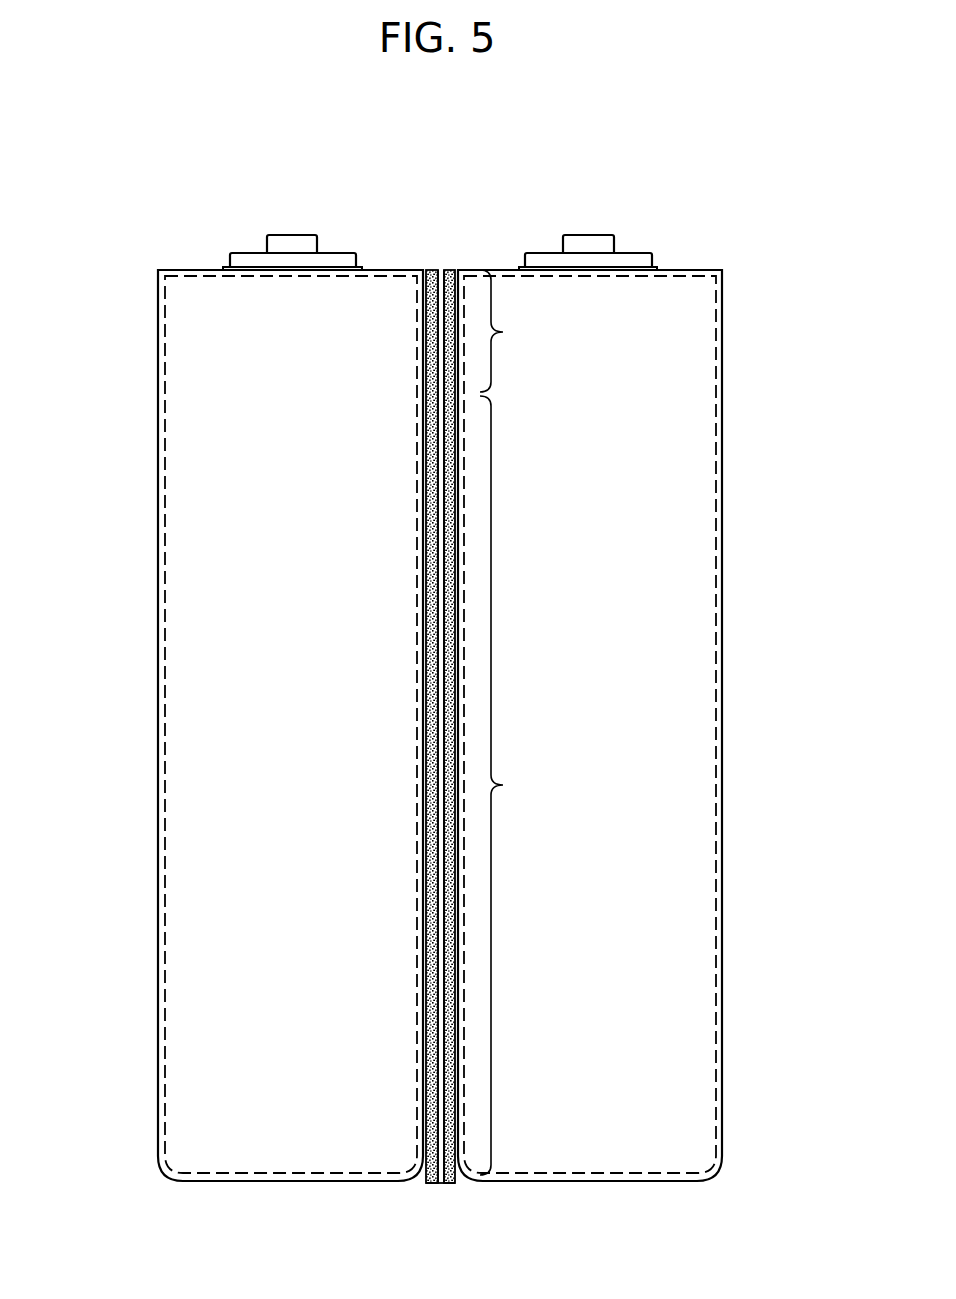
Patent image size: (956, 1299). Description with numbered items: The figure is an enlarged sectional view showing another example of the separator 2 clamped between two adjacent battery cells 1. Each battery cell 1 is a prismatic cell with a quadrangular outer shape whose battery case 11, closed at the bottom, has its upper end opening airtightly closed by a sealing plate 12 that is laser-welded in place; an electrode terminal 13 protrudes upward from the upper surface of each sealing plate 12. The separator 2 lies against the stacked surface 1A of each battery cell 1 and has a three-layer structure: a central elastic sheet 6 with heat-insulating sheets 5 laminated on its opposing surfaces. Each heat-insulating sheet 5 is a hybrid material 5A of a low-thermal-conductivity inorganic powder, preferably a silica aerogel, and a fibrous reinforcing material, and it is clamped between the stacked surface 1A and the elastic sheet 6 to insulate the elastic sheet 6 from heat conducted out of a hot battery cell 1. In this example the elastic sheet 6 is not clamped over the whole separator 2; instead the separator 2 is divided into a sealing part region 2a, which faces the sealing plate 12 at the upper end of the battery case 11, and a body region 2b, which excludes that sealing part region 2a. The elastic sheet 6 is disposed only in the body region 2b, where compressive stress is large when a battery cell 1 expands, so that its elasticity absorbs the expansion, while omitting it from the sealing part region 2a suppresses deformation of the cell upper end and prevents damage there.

The battery cell 1 is at (166, 226).
The stacked surface 1A is at (435, 953).
The separator 2 is at (406, 665).
The sealing part region 2a is at (515, 331).
The body region 2b is at (515, 785).
The heat-insulating sheet 5 is at (440, 728).
The hybrid material 5A is at (368, 726).
The elastic sheet 6 is at (441, 538).
The battery case 11 is at (158, 775).
The sealing plate 12 is at (199, 267).
The electrode terminals 13 is at (291, 242).